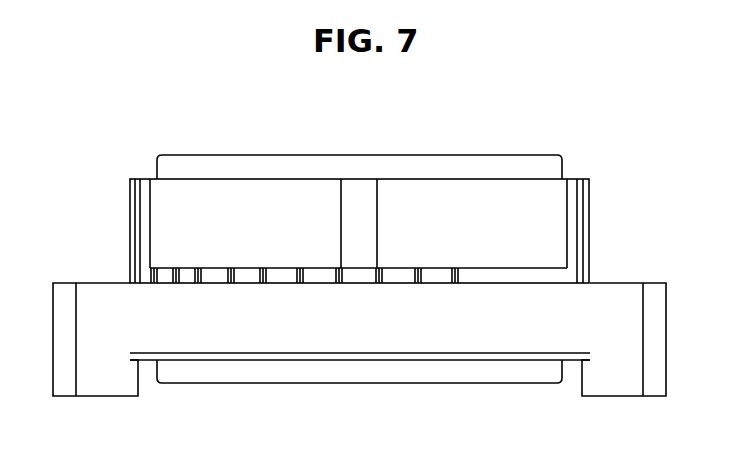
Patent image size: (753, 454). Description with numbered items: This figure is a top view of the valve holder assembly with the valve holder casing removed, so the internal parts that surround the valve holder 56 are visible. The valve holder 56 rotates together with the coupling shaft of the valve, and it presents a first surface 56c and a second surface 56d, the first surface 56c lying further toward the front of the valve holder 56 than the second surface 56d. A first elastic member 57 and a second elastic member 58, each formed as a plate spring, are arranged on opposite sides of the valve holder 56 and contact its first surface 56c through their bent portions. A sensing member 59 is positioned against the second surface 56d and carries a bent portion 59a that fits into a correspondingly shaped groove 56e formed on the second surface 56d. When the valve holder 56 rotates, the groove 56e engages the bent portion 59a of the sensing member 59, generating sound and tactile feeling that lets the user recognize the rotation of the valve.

The valve holder 56 is at (480, 173).
The first surface 56c is at (382, 335).
The second surface 56d is at (497, 273).
The groove 56e is at (135, 232).
The first elastic member 57 is at (62, 343).
The second elastic member 58 is at (656, 344).
The bent portion 59a is at (363, 175).
The sensing member 59 is at (360, 195).